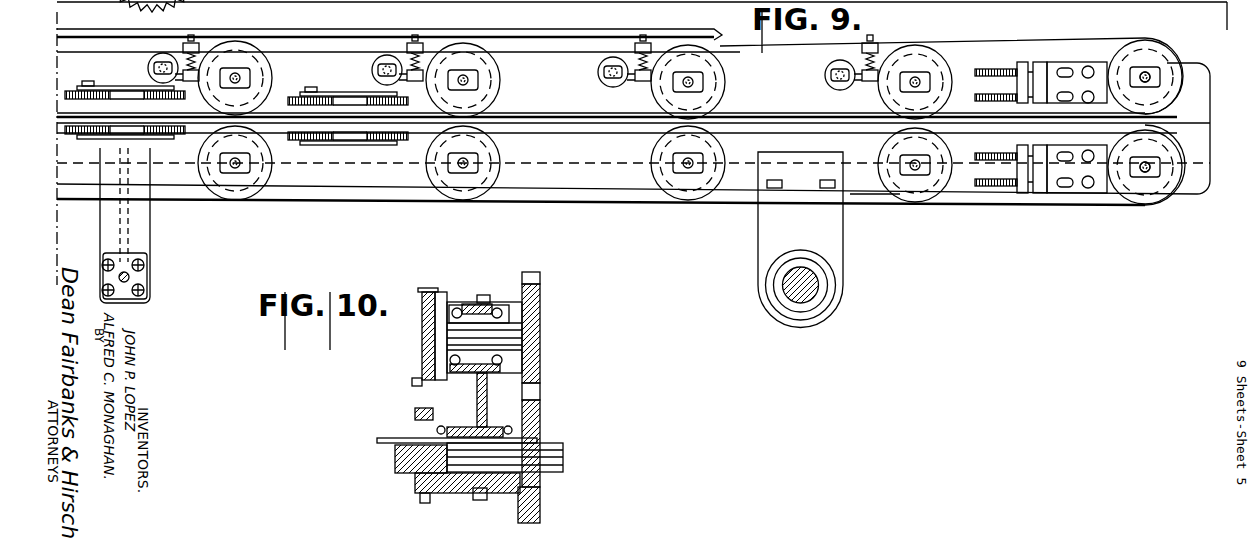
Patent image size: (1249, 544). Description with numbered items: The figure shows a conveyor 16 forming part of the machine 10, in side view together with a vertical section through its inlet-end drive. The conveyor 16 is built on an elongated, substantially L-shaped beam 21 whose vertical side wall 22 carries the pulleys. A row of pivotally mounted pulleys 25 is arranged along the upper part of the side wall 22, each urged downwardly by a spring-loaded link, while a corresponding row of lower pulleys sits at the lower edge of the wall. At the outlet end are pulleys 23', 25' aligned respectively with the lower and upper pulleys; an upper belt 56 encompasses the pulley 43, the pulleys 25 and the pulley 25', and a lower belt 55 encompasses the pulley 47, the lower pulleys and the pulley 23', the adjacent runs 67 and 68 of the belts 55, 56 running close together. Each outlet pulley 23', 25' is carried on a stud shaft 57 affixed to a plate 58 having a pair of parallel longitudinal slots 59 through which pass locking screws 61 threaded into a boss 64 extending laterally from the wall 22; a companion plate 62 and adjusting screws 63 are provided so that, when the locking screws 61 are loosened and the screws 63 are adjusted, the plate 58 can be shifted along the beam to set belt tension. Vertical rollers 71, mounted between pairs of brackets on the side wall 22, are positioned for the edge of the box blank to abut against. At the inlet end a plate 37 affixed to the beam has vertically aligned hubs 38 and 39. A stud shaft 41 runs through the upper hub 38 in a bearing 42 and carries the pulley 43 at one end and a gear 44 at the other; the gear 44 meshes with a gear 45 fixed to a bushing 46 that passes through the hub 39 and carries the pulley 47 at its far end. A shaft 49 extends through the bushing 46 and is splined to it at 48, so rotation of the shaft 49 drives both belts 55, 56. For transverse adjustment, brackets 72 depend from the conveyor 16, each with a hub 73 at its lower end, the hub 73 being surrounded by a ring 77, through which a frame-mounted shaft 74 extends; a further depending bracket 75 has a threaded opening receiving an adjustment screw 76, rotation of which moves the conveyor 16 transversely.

In FIG. 9, the conveyor 10 is at (160, 18).
In FIG. 9, the conveyor 16 is at (927, 216).
In FIG. 9, the beam 21 is at (624, 195).
In FIG. 9, the side wall 22 is at (768, 95).
In FIG. 9, the pulley 23' is at (1145, 187).
In FIG. 9, the pulley 25 is at (463, 60).
In FIG. 9, the pulley 25' is at (1145, 62).
In FIG. 10, the plate 37 is at (488, 390).
In FIG. 10, the upper hub 38 is at (492, 298).
In FIG. 10, the hub 39 is at (460, 491).
In FIG. 10, the stud shaft 41 is at (540, 333).
In FIG. 10, the bearing 42 is at (455, 304).
In FIG. 10, the pulley 43 is at (422, 294).
In FIG. 10, the gear 44 is at (532, 271).
In FIG. 10, the gear 45 is at (543, 498).
In FIG. 10, the bushing 46 is at (487, 496).
In FIG. 10, the pulley 47 is at (413, 485).
In FIG. 10, the spline 48 is at (470, 430).
In FIG. 10, the shaft 49 is at (565, 458).
In FIG. 9, the belt 55 is at (880, 210).
In FIG. 10, the belt 55 is at (404, 412).
In FIG. 9, the belt 56 is at (930, 18).
In FIG. 10, the belt 56 is at (410, 387).
In FIG. 9, the stud shaft 57 is at (1145, 170).
In FIG. 9, the plate 58 is at (1060, 190).
In FIG. 9, the slot 59 is at (1080, 68).
In FIG. 9, the locking screw 61 is at (1087, 188).
In FIG. 9, the adjusting plate 62 is at (1043, 190).
In FIG. 9, the screw 63 is at (1043, 62).
In FIG. 9, the boss 64 is at (1022, 62).
In FIG. 9, the run 67 is at (580, 134).
In FIG. 9, the run 68 is at (570, 107).
In FIG. 9, the vertical roller 71 is at (290, 146).
In FIG. 9, the bracket 72 is at (763, 240).
In FIG. 9, the hub 73 is at (785, 303).
In FIG. 9, the shaft 74 is at (808, 297).
In FIG. 9, the bracket 75 is at (140, 232).
In FIG. 9, the adjustment screw 76 is at (129, 277).
In FIG. 9, the ring 77 is at (837, 258).